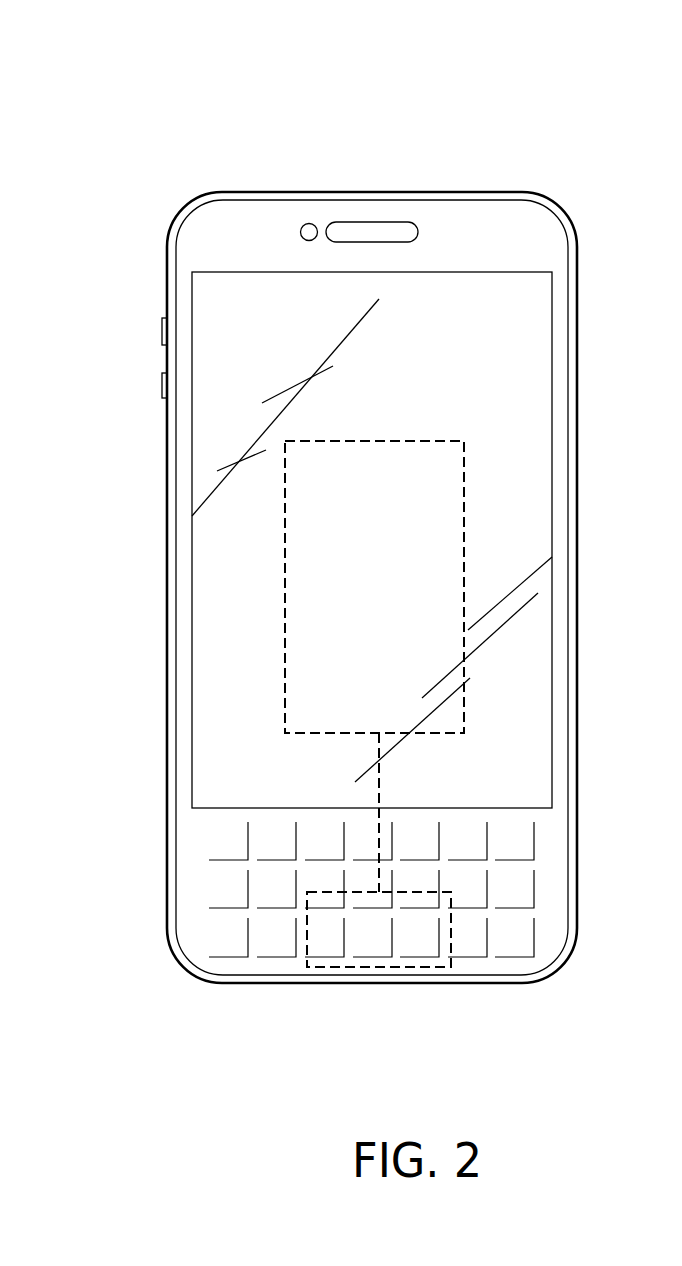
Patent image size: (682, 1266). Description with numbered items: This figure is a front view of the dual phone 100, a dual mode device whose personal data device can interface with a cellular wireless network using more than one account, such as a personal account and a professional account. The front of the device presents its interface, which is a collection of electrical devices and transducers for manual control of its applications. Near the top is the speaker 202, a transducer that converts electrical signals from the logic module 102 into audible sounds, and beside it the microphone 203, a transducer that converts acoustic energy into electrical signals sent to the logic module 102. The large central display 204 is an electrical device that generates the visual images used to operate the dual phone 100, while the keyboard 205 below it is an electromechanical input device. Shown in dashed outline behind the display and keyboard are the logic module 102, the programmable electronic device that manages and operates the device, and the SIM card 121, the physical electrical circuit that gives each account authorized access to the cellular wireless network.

The dual phone 100 is at (120, 137).
The logic module 102 is at (428, 457).
The SIM card 121 is at (407, 943).
The speaker 202 is at (368, 233).
The microphone 203 is at (307, 222).
The display 204 is at (222, 675).
The keyboard 205 is at (220, 842).